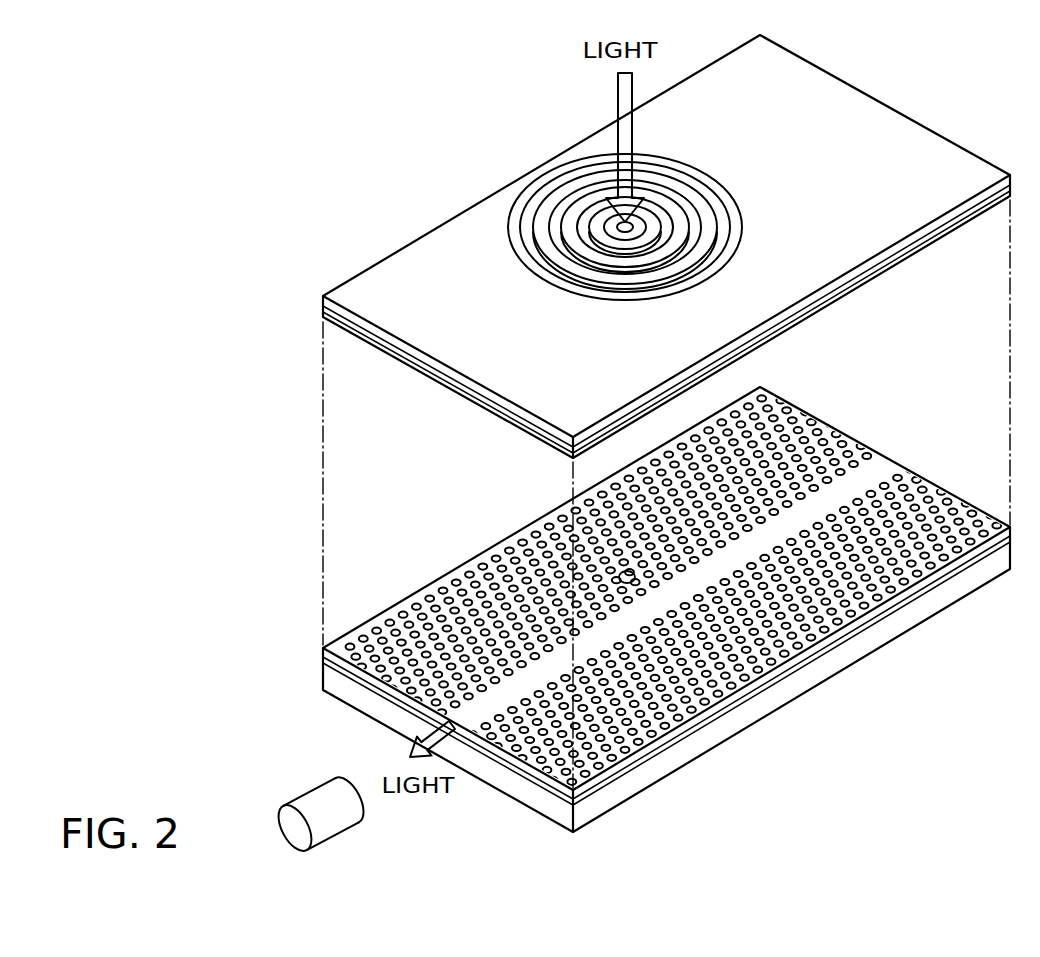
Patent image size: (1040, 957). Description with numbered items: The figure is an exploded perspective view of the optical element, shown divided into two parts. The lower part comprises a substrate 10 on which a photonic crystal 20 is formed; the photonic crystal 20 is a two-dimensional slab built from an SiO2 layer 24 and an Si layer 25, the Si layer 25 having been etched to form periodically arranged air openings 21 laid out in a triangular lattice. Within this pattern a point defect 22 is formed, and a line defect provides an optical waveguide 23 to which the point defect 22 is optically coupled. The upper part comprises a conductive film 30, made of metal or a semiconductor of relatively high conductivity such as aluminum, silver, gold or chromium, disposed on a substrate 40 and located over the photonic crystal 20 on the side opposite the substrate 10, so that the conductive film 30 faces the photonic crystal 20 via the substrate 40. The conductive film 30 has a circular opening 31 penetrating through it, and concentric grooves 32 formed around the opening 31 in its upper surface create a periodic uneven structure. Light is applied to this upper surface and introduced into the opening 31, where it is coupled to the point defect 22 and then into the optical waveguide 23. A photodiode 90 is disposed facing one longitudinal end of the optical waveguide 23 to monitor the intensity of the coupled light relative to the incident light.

The substrate 10 is at (540, 802).
The photonic crystal 20 is at (632, 592).
The air openings 21 is at (842, 619).
The point defect 22 is at (621, 565).
The optical waveguide 23 is at (817, 505).
The SiO2 layer 24 is at (373, 690).
The Si layer 25 is at (325, 661).
The conductive film 30 is at (666, 246).
The opening 31 is at (617, 221).
The grooves 32 is at (582, 220).
The substrate 40 is at (452, 385).
The photodiode 90 is at (330, 840).